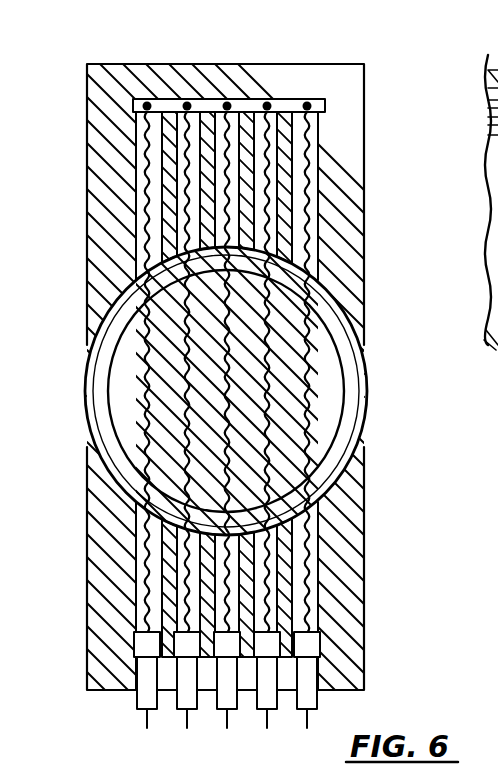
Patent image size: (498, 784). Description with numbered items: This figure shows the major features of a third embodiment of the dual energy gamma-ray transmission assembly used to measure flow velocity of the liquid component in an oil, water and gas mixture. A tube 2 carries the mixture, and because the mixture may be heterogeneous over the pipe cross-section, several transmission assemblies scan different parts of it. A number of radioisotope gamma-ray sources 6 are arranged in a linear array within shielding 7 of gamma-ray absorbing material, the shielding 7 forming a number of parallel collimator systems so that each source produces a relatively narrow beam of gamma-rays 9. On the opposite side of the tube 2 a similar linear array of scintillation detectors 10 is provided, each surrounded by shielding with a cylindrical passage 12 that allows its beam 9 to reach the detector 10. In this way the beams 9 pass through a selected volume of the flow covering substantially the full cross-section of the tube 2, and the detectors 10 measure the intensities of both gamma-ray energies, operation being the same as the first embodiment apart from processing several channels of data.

The tube 2 is at (98, 420).
The radioisotope gamma-ray sources 6 is at (247, 78).
The shielding 7 is at (168, 173).
The beam of gamma-rays 9 is at (148, 360).
The scintillation detector 10 is at (303, 680).
The cylindrical passage 12 is at (313, 142).